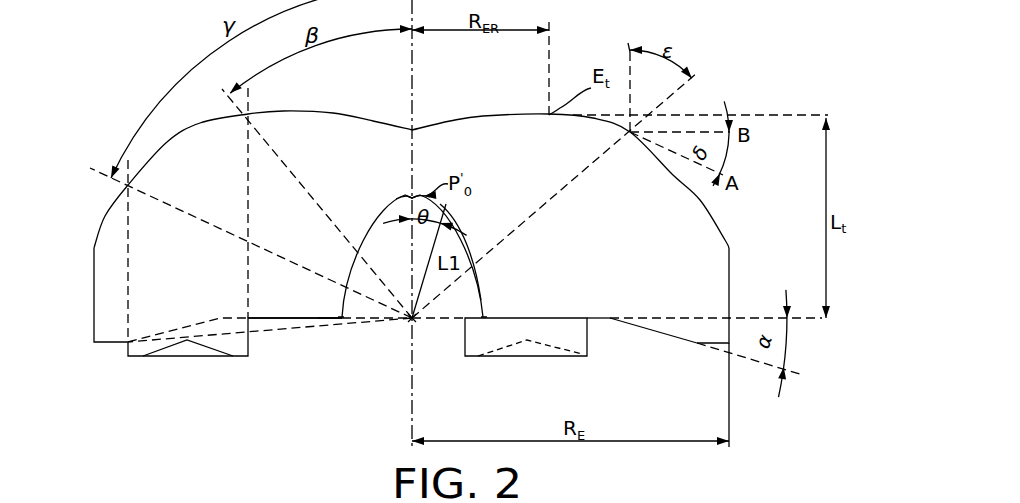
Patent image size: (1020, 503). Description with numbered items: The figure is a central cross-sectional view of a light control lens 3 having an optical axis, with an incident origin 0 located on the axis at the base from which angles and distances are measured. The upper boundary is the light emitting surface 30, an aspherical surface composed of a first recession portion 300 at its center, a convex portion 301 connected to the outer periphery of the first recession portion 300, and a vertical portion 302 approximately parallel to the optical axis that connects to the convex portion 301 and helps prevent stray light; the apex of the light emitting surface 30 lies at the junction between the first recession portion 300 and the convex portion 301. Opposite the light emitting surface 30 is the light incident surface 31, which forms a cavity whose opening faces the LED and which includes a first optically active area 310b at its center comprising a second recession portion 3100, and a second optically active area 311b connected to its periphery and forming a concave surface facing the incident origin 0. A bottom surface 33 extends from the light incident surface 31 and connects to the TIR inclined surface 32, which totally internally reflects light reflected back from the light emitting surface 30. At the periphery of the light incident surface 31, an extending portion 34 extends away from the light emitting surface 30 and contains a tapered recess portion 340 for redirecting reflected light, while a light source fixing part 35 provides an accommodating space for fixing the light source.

The light control lens 3 is at (698, 233).
The light emitting surface 30 is at (197, 126).
The first recession portion 300 is at (487, 114).
The convex portion 301 is at (710, 208).
The vertical portion 302 is at (731, 268).
The light incident surface 31 is at (539, 251).
The first optically active area 310b is at (420, 192).
The second optically active area 311b is at (478, 285).
The second recession portion 3100 is at (402, 187).
The total internal reflection inclined surface 32 is at (658, 333).
The bottom surface 33 is at (275, 320).
The extending portion 34 is at (587, 356).
The tapered recess portion 340 is at (526, 357).
The light source fixing part 35 is at (326, 320).
The incident origin 0 is at (411, 320).